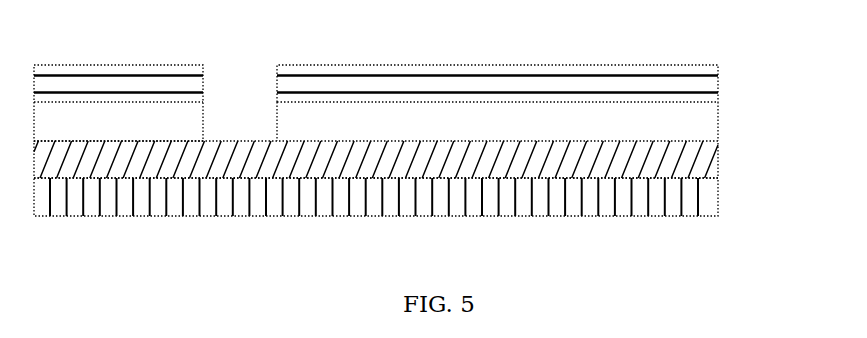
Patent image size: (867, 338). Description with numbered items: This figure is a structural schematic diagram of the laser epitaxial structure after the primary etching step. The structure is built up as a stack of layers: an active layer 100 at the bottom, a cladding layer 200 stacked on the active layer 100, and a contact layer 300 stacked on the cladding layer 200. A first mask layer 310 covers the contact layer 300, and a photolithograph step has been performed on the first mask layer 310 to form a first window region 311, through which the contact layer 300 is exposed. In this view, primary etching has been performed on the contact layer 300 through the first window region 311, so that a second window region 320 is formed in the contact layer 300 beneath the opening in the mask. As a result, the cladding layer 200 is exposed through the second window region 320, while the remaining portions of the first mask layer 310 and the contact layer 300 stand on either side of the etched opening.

The active layer 100 is at (694, 203).
The cladding layer 200 is at (694, 166).
The contact layer 300 is at (694, 127).
The first mask layer 310 is at (694, 90).
The first window region 311 is at (241, 79).
The second window region 320 is at (228, 119).